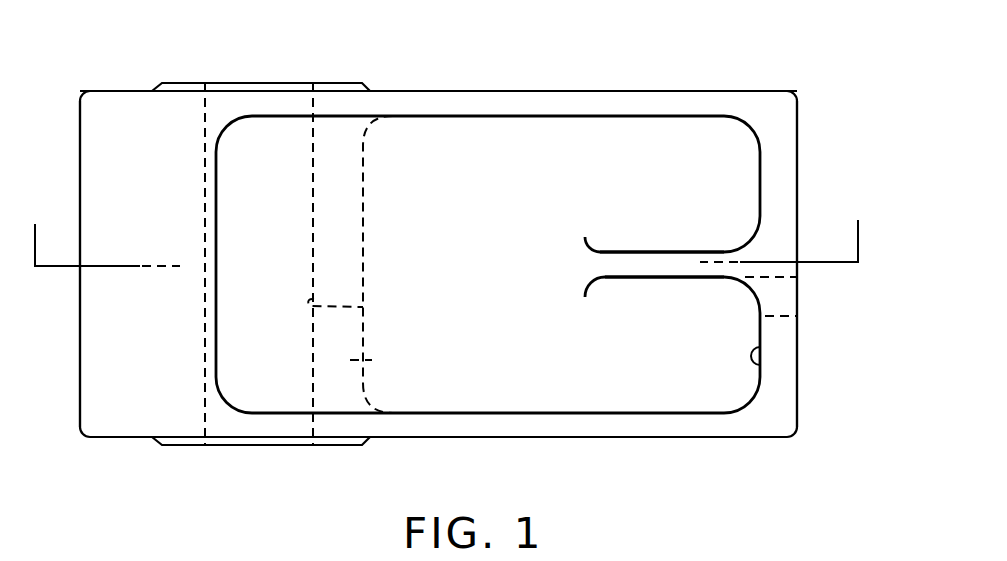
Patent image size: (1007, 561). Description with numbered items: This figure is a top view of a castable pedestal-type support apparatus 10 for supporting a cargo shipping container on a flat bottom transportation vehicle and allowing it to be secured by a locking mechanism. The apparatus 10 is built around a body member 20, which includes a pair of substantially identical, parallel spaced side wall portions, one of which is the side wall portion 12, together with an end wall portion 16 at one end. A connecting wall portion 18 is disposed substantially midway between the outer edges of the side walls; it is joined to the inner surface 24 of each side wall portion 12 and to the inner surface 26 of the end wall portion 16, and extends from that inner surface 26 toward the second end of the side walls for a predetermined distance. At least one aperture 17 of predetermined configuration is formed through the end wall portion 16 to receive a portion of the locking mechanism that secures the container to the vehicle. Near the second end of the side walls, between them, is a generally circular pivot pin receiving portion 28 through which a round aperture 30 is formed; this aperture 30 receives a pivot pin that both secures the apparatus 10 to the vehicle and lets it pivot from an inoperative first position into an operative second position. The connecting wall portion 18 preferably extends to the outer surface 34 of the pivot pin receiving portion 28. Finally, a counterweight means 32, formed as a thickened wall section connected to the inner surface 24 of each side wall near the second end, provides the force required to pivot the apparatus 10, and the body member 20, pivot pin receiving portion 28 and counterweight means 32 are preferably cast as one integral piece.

The pedestal-type support apparatus 10 is at (578, 74).
The side wall portion 12 is at (620, 428).
The end wall portion 16 is at (785, 150).
The aperture 17 is at (782, 295).
The connecting wall portion 18 is at (668, 258).
The body member 20 is at (669, 84).
The inner surface 24 is at (544, 118).
The inner surface 26 is at (762, 366).
The pivot pin receiving portion 28 is at (372, 360).
The aperture 30 is at (363, 307).
The counterweight means 32 is at (118, 104).
The outer surface 34 is at (449, 90).